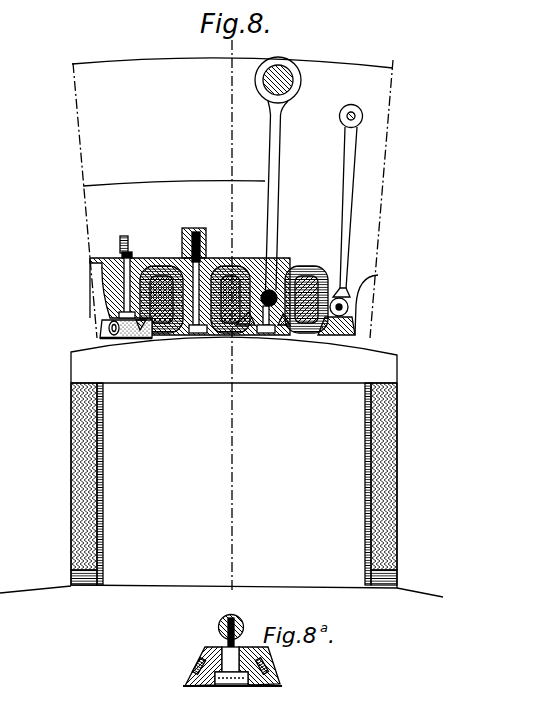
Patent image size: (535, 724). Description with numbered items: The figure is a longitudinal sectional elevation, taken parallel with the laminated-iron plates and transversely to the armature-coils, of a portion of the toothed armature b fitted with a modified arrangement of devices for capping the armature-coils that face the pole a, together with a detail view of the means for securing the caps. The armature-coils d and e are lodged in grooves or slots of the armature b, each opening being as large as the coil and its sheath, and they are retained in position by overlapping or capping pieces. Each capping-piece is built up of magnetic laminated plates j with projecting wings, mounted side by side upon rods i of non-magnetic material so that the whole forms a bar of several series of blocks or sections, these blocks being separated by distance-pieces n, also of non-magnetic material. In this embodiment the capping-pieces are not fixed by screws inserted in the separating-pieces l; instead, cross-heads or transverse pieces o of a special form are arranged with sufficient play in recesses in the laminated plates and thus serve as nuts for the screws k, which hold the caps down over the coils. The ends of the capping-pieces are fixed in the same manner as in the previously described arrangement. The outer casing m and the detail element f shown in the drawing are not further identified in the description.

In FIG. 8, the outer casing m is at (232, 198).
In FIG. 8, the toothed armature b is at (174, 169).
In FIG. 8, the separating-pieces l is at (277, 186).
In FIG. 8, the armature-coil e is at (183, 281).
In FIG. 8, the armature-coil d is at (234, 299).
In FIG. 8, the screws k is at (123, 261).
In FIG. 8, the cross-heads or transverse pieces o is at (273, 292).
In FIG. 8, the distance-pieces n is at (118, 332).
In FIG. 8, the rods i is at (110, 327).
In FIG. 8, the magnetic laminated plates j is at (362, 331).
In FIG. 8, the pole a is at (221, 467).
In FIG. 8A, the pin seat f is at (231, 688).